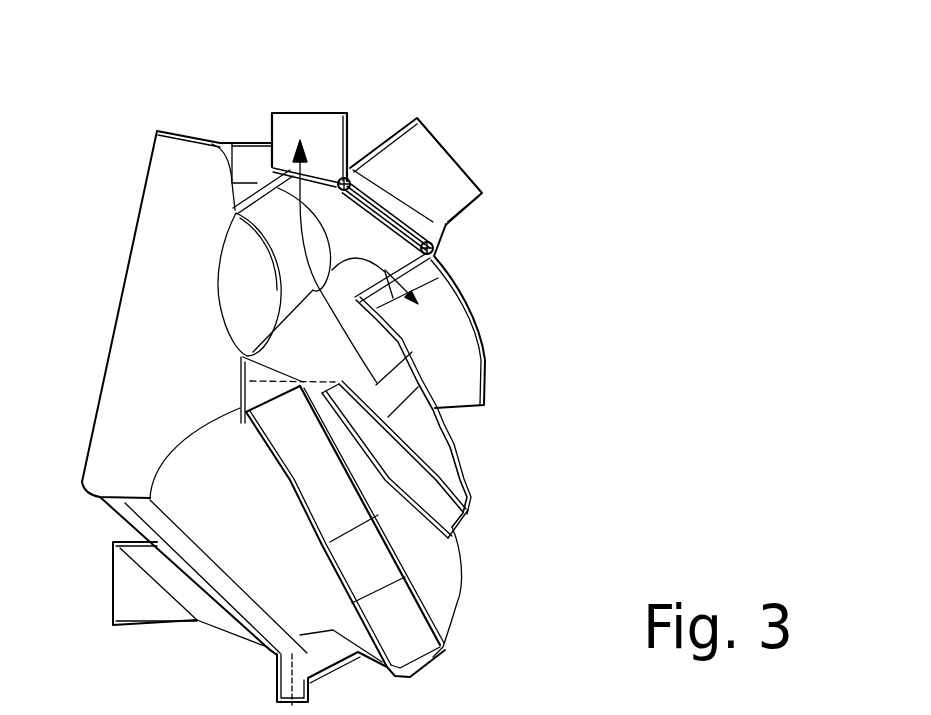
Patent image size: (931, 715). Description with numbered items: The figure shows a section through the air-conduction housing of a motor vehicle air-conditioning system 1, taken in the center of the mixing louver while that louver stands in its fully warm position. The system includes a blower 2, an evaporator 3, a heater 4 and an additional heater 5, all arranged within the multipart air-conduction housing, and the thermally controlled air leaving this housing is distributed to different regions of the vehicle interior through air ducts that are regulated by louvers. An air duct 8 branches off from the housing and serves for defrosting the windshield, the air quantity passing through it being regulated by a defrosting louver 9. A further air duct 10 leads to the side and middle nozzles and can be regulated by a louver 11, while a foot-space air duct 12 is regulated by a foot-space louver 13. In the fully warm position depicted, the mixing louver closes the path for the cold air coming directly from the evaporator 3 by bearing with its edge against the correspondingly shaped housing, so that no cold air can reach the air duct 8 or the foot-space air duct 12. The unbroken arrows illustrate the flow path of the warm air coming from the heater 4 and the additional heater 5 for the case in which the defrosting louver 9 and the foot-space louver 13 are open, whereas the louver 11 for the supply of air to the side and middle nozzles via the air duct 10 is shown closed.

The motor vehicle air-conditioning system 1 is at (623, 322).
The blower 2 is at (195, 628).
The evaporator 3 is at (350, 683).
The heater 4 is at (390, 608).
The additional heater 5 is at (422, 486).
The air duct 8 is at (284, 118).
The defrosting louver 9 is at (340, 133).
The air duct 10 is at (422, 170).
The louver 11 is at (415, 226).
The foot-space air duct 12 is at (452, 367).
The foot-space louver 13 is at (437, 250).